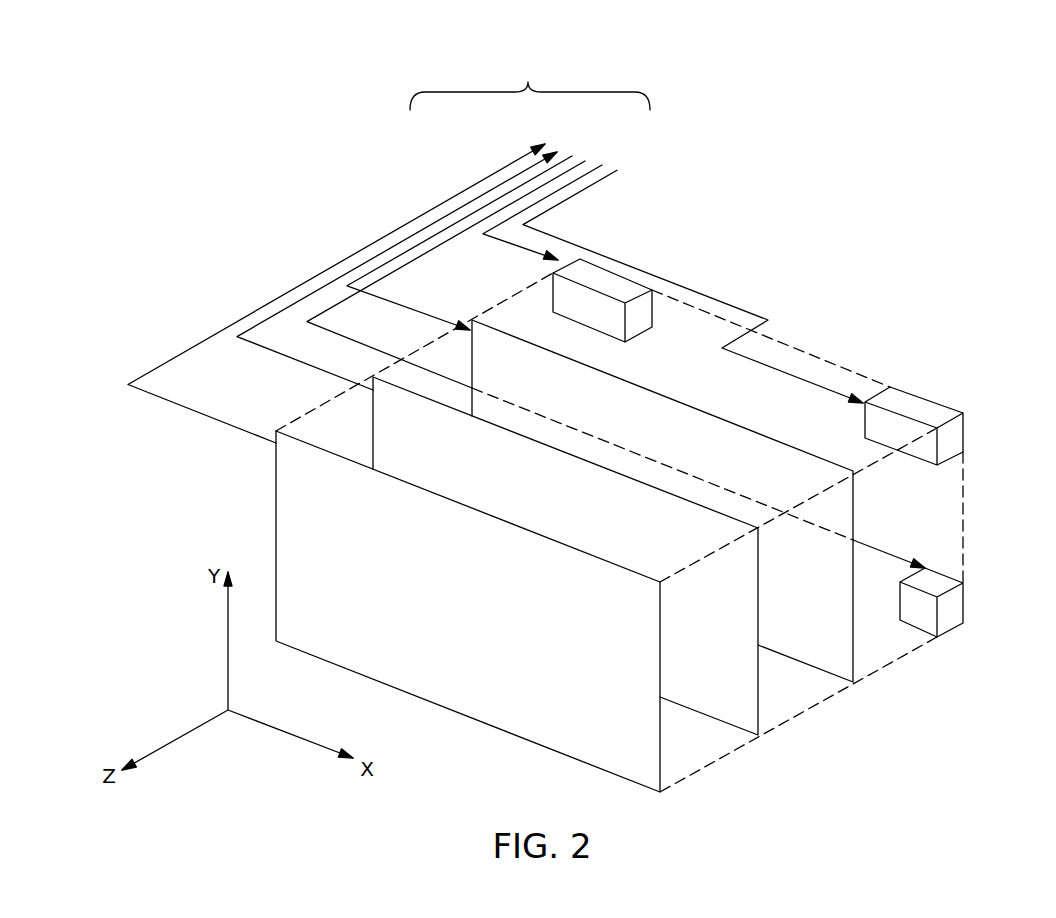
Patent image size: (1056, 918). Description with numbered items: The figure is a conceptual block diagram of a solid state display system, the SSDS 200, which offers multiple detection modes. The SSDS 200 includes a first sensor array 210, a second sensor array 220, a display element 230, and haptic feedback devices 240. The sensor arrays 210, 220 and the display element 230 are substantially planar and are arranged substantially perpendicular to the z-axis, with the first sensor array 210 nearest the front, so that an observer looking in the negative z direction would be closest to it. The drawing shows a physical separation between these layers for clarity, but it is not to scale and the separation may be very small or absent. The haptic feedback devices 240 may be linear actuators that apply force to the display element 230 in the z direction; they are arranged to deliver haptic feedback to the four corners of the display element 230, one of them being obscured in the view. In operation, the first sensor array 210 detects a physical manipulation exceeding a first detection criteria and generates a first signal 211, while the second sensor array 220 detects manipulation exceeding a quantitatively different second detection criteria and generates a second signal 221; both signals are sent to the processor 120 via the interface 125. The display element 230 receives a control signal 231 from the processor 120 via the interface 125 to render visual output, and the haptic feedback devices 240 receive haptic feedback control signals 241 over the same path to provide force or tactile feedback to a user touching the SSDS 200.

The SSDS 200 is at (163, 182).
The first sensor array 210 is at (638, 759).
The second sensor array 220 is at (742, 705).
The display element 230 is at (792, 648).
The first signal 211 is at (403, 226).
The second signal 221 is at (467, 202).
The control signal 231 is at (570, 156).
The haptic feedback control signals 241 is at (580, 158).
The haptic feedback devices 240 is at (647, 302).
The processor 120 is at (530, 68).
The interface 125 is at (531, 69).